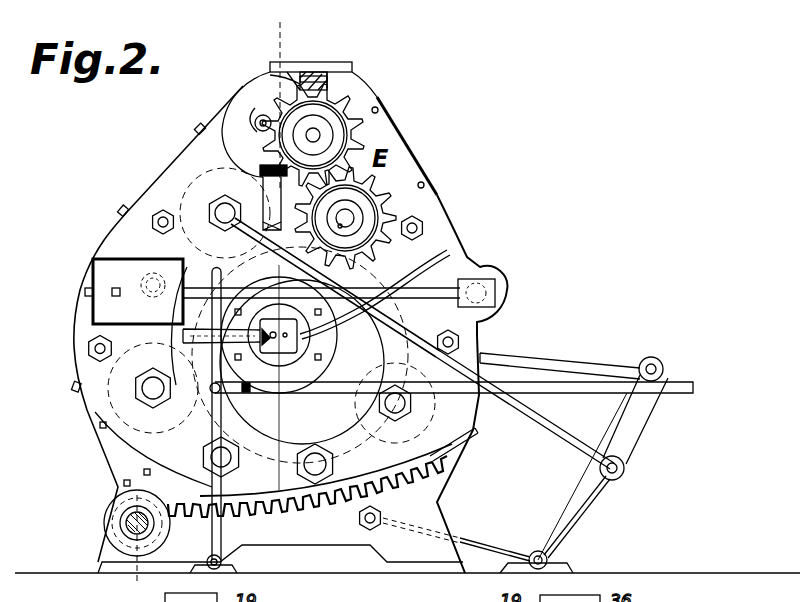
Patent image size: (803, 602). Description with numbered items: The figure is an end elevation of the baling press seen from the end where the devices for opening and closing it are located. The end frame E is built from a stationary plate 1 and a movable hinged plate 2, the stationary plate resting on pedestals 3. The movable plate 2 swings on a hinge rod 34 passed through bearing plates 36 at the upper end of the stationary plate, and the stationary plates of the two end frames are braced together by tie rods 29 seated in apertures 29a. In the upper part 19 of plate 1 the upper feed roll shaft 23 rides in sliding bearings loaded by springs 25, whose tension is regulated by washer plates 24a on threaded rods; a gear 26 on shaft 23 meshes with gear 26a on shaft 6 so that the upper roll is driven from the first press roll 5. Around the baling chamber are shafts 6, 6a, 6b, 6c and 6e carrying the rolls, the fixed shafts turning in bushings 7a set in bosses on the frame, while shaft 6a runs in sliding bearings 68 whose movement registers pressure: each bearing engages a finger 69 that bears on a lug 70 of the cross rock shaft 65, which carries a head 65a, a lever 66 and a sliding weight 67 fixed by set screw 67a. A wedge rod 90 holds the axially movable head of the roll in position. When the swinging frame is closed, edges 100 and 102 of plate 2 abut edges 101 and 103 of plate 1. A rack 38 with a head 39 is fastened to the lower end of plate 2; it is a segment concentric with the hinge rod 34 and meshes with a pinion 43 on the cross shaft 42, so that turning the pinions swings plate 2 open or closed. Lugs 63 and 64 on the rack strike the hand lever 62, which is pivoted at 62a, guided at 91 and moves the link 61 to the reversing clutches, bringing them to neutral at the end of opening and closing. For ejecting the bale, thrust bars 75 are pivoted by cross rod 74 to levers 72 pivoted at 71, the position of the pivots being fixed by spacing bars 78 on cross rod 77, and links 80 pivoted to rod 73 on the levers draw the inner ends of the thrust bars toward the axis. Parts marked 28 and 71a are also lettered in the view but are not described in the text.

The stationary plate 1 is at (385, 127).
The movable hinged plate 2 is at (193, 155).
The legs or pedestals 3 is at (110, 592).
The roll 5 is at (280, 22).
The shaft 6 is at (350, 216).
The shaft 6a is at (232, 457).
The shaft 6b is at (405, 405).
The shaft 6c is at (327, 466).
The shaft 6e is at (153, 396).
The bushings 7a is at (444, 335).
The upper part of frame element 19 is at (345, 78).
The shaft 23 is at (328, 147).
The washer plates 24a is at (305, 69).
The springs 25 is at (342, 70).
The gear 26 is at (340, 113).
The gear 26a is at (425, 186).
The lug 28 is at (198, 128).
The tie rods 29 is at (170, 208).
The apertures 29a is at (461, 339).
The hinge rod 34 is at (263, 115).
The bearing plates 36 is at (246, 92).
The rack 38 is at (338, 505).
The head 39 is at (120, 466).
The cross shaft 42 is at (124, 524).
The pinions 43 is at (118, 543).
The link 61 is at (672, 385).
The hand lever 62 is at (222, 530).
The pivot 62a is at (224, 562).
The lug 63 is at (472, 437).
The lug 64 is at (212, 525).
The cross rock shaft 65 is at (321, 293).
The head 65a is at (498, 304).
The lever 66 is at (274, 294).
The sliding weight 67 is at (93, 264).
The set screw 67a is at (129, 314).
The sliding bearings 68 is at (413, 276).
The finger 69 is at (224, 205).
The lugs 70 is at (494, 268).
The pivot 71 is at (548, 560).
The bracket 71a is at (590, 569).
The levers 72 is at (632, 433).
The rod 73 is at (627, 467).
The cross rod 74 is at (651, 364).
The thrust bars 75 is at (590, 364).
The cross rod 77 is at (384, 516).
The spacing bars 78 is at (518, 535).
The links 80 is at (590, 443).
The wedge rod 90 is at (441, 252).
The guide 91 is at (203, 346).
The edge 100 is at (135, 448).
The edge 101 is at (192, 448).
The edge 102 is at (141, 485).
The edge 103 is at (190, 471).